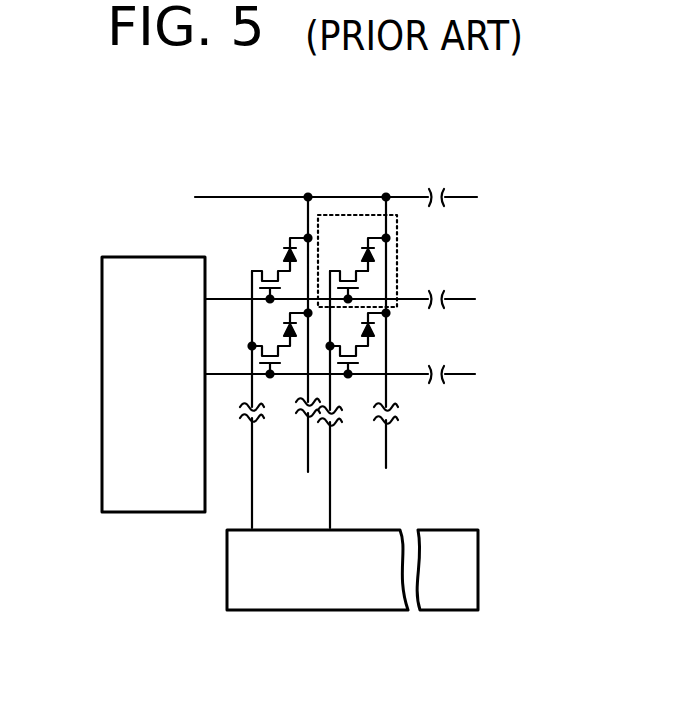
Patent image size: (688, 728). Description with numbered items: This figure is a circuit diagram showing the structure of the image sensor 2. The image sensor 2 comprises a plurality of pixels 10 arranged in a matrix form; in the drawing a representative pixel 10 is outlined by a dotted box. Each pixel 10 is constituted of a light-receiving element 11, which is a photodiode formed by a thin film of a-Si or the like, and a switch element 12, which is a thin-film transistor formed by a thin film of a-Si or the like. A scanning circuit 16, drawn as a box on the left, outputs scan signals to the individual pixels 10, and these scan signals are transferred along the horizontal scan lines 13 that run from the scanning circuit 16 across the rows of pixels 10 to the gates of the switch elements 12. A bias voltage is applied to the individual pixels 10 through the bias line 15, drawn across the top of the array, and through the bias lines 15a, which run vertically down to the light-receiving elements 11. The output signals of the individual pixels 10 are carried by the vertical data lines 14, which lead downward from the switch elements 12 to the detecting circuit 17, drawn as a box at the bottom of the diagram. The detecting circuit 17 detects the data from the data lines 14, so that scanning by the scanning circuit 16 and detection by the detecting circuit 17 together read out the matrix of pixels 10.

The image sensor 2 is at (327, 167).
The pixel 10 is at (397, 228).
The light-receiving element 11 is at (374, 255).
The switch element 12 is at (343, 276).
The scan lines 13 is at (460, 302).
The data lines 14 is at (252, 491).
The bias line 15 is at (220, 196).
The bias line 15a is at (308, 449).
The scanning circuit 16 is at (169, 257).
The detecting circuit 17 is at (478, 558).